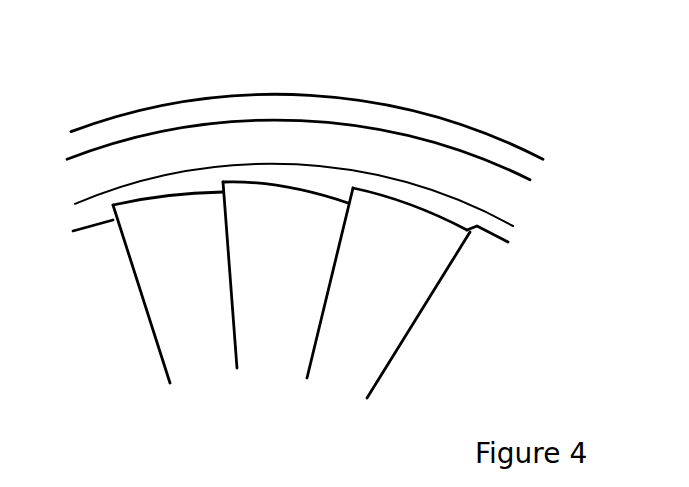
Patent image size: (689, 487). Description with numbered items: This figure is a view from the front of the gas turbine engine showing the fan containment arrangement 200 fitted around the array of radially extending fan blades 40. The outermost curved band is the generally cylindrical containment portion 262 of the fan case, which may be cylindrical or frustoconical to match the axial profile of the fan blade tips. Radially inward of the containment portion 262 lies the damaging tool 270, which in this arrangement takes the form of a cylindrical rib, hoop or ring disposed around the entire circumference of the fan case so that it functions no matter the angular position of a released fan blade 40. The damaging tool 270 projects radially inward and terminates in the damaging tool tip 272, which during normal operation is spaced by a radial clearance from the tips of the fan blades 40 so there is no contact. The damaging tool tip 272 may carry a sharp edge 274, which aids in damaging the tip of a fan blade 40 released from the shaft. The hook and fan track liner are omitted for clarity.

The fan containment arrangement 200 is at (123, 44).
The generally cylindrical containment portion 262 is at (402, 123).
The damaging tool 270 is at (245, 134).
The damaging tool tip 272 is at (303, 160).
The sharp edge 274 is at (455, 200).
The fan blade 40 is at (183, 278).